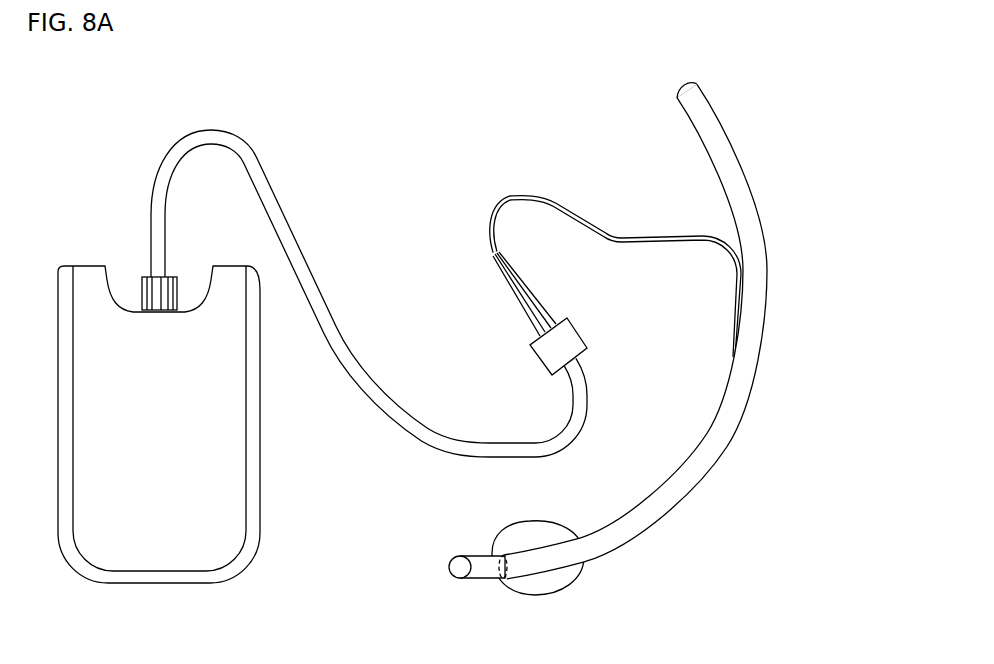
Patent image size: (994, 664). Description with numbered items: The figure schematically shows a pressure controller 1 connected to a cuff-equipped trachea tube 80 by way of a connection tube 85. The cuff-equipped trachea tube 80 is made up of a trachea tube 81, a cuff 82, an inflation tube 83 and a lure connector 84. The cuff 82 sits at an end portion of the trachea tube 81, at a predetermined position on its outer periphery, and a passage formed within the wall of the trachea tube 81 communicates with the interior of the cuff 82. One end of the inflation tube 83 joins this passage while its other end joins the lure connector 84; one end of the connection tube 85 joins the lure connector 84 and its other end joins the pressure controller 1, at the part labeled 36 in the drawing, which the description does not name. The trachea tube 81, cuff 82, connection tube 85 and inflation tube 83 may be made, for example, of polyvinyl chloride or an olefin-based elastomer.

The pressure controller 1 is at (86, 266).
The connector 36 is at (141, 290).
The cuff-equipped trachea tube 80 is at (768, 151).
The trachea tube 81 is at (762, 293).
The cuff 82 is at (551, 518).
The inflation tube 83 is at (636, 238).
The lure connector 84 is at (581, 329).
The connection tube 85 is at (321, 283).